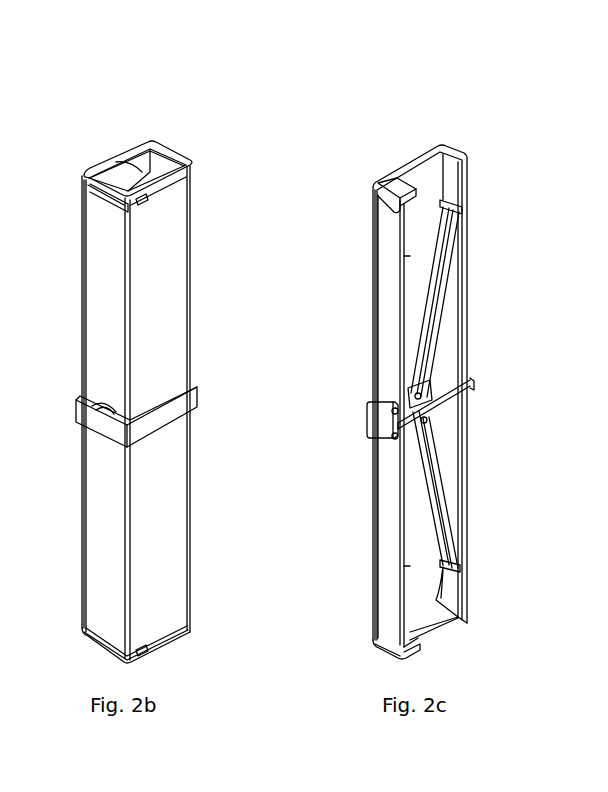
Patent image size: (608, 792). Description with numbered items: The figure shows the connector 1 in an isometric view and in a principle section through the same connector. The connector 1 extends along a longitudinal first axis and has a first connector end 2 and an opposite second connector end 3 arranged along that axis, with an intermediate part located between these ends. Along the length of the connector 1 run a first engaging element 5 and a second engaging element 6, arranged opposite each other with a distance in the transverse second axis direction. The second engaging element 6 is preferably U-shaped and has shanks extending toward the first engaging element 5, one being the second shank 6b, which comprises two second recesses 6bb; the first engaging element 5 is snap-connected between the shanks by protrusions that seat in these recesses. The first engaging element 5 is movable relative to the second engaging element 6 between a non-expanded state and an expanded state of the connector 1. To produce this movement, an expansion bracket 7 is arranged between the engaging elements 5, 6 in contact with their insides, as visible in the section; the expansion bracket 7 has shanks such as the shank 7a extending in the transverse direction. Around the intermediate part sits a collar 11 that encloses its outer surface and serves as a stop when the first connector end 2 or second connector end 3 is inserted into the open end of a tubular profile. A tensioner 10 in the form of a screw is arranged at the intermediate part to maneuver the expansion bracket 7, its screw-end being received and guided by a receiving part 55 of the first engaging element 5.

In FIG. 2B, the connector 1 is at (67, 105).
In FIG. 2C, the connector 1 is at (363, 128).
In FIG. 2B, the first connector end 2 is at (70, 633).
In FIG. 2C, the first connector end 2 is at (362, 640).
In FIG. 2B, the second connector end 3 is at (72, 192).
In FIG. 2C, the second connector end 3 is at (368, 203).
In FIG. 2B, the first engaging element 5 is at (108, 281).
In FIG. 2C, the first engaging element 5 is at (381, 302).
In FIG. 2B, the second engaging element 6 is at (182, 156).
In FIG. 2C, the second engaging element 6 is at (460, 172).
In FIG. 2B, the second shank 6b is at (180, 485).
In FIG. 2B, the second recess 6bb is at (152, 202).
In FIG. 2C, the expansion bracket 7 is at (440, 257).
In FIG. 2B, the shank of expansion bracket 7a is at (122, 160).
In FIG. 2C, the shank of expansion bracket 7a is at (432, 251).
In FIG. 2C, the tensioner 10 is at (450, 393).
In FIG. 2B, the collar 11 is at (183, 404).
In FIG. 2C, the receiving part 55 is at (390, 402).